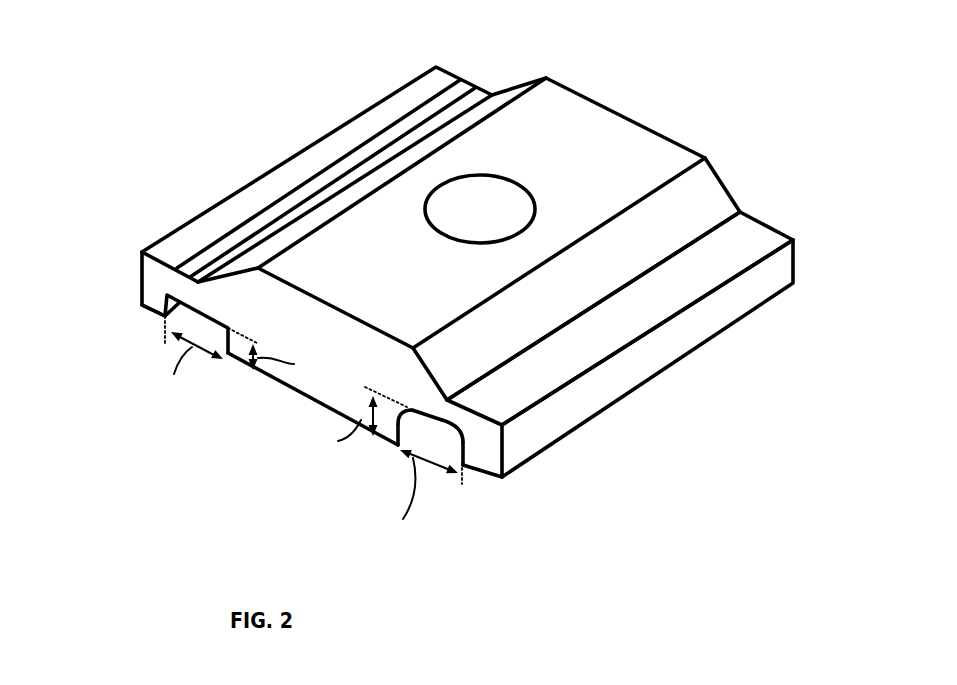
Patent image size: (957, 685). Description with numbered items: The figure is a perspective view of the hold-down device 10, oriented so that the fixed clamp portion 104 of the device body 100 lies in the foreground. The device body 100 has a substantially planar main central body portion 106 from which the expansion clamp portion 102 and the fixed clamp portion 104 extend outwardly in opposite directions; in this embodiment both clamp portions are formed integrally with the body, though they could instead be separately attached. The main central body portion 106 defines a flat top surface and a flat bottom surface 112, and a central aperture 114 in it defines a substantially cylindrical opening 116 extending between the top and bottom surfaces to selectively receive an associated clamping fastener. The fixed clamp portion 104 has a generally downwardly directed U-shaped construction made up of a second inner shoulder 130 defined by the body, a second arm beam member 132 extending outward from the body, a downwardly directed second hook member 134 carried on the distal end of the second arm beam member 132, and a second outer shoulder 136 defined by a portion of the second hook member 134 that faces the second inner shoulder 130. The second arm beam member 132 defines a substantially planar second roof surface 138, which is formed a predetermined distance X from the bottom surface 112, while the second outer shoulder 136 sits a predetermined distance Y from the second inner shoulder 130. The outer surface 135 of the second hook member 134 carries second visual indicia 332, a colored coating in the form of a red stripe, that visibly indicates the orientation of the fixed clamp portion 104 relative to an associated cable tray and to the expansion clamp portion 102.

The hold-down device 10 is at (192, 101).
The device body 100 is at (566, 120).
The expansion clamp portion 102 is at (122, 308).
The fixed clamp portion 104 is at (824, 219).
The main central body portion 106 is at (625, 165).
The bottom surface 112 is at (283, 390).
The central aperture 114 is at (458, 192).
The cylindrical opening 116 is at (490, 200).
The second inner shoulder 130 is at (412, 448).
The second arm beam member 132 is at (450, 417).
The second hook member 134 is at (477, 448).
The outer surface of second hook member 135 is at (477, 467).
The second outer shoulder 136 is at (456, 433).
The second roof surface 138 is at (438, 416).
The second visual indicia 332 is at (748, 308).